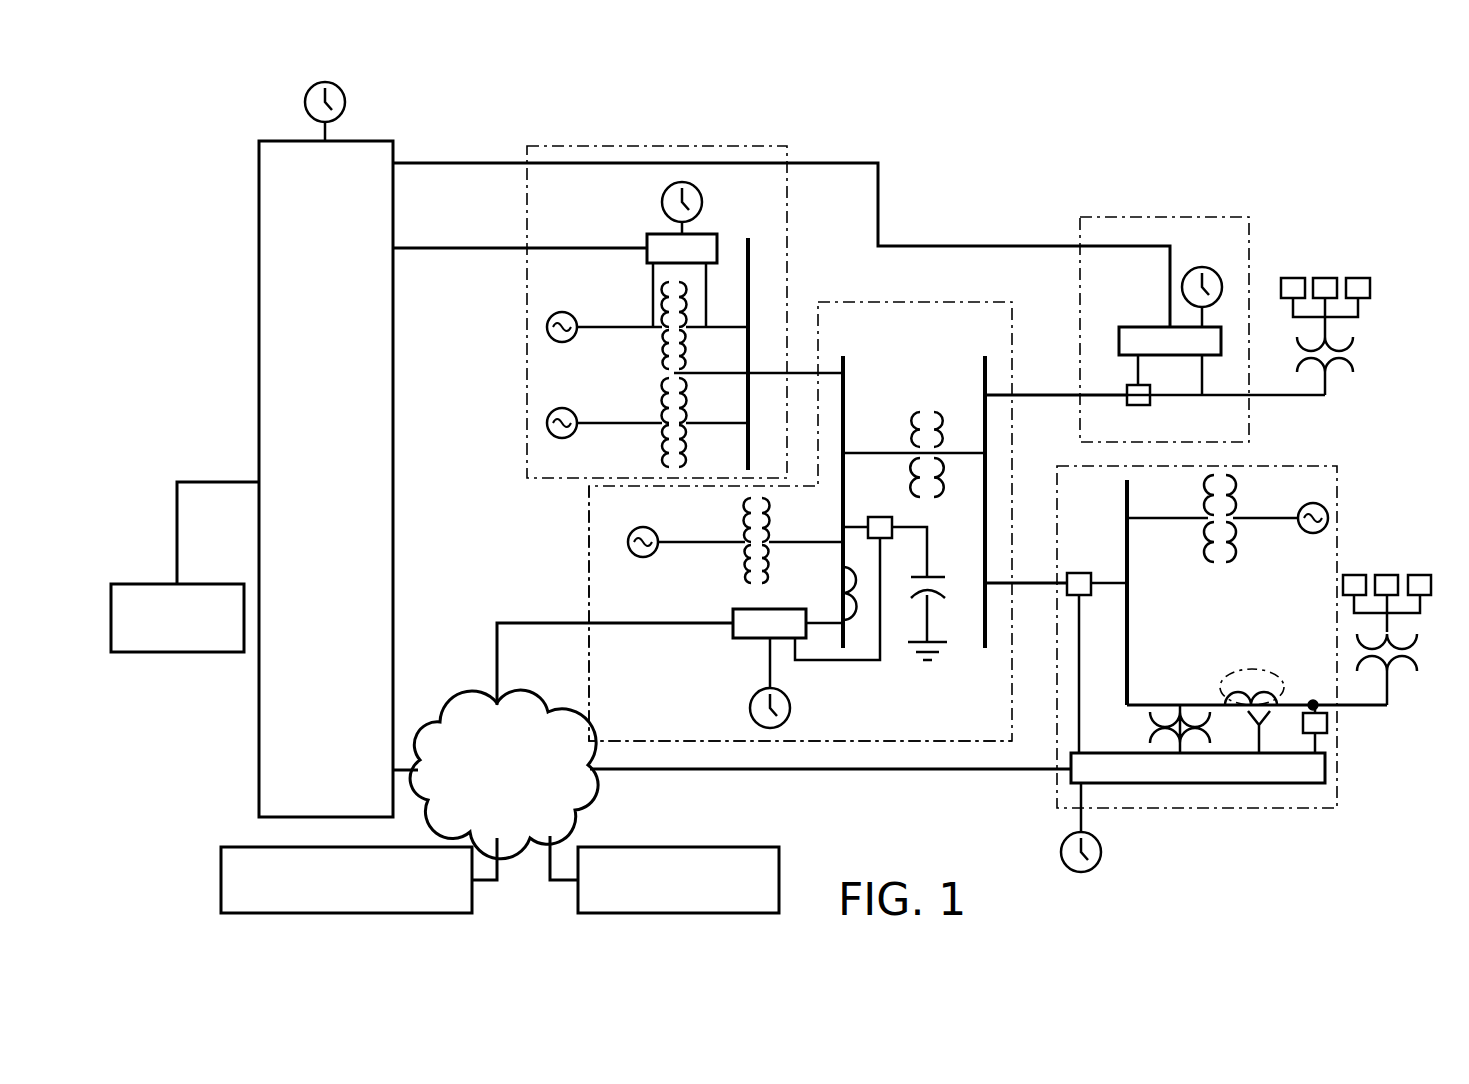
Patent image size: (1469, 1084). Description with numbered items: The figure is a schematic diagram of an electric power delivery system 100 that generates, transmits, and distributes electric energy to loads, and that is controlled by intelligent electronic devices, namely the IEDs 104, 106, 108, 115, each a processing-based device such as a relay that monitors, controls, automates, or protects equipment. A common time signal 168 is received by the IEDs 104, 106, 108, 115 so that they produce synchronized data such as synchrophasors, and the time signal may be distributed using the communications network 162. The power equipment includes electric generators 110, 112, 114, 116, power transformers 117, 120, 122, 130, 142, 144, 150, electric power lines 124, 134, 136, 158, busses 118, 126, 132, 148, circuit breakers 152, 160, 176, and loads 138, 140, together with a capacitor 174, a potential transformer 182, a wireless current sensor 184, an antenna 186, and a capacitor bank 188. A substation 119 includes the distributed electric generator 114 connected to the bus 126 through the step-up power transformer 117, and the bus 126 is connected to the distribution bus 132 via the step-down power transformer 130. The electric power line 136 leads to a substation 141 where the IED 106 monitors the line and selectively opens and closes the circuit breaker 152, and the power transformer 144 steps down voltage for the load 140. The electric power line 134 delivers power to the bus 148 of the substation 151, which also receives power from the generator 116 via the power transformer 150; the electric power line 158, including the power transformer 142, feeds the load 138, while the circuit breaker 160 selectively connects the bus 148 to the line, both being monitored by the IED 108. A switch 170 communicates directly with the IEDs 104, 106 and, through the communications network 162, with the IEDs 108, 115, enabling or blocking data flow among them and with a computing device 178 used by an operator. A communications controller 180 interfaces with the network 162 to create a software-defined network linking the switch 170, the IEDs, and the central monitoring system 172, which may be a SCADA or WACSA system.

The electric power delivery system 100 is at (1328, 135).
The IED 104 is at (652, 234).
The IED 106 is at (1128, 327).
The IED 108 is at (1250, 783).
The electric generator 110 is at (562, 312).
The electric generator 112 is at (562, 408).
The electric generator 114 is at (650, 527).
The IED 115 is at (775, 608).
The electric generator 116 is at (1306, 534).
The power transformer 117 is at (742, 570).
The bus 118 is at (752, 243).
The substation 119 is at (589, 578).
The power transformer 120 is at (660, 360).
The power transformer 122 is at (660, 452).
The electric power line 124 is at (800, 370).
The bus 126 is at (845, 383).
The power transformer 130 is at (924, 412).
The bus 132 is at (983, 630).
The electric power line 134 is at (1024, 586).
The electric power line 136 is at (1105, 397).
The load 138 is at (1387, 574).
The load 140 is at (1360, 278).
The substation 141 is at (1100, 217).
The power transformer 142 is at (1400, 650).
The power transformer 144 is at (1356, 352).
The bus 148 is at (1125, 482).
The power transformer 150 is at (1232, 466).
The substation 151 is at (1315, 808).
The circuit breaker 152 is at (1140, 405).
The electric power line 158 is at (1360, 705).
The circuit breaker 160 is at (1090, 573).
The communications network 162 is at (450, 714).
The common time signal 168 is at (345, 104).
The switch 170 is at (393, 478).
The central monitoring system 172 is at (221, 872).
The capacitor 174 is at (942, 576).
The circuit breaker 176 is at (878, 517).
The computing device 178 is at (176, 654).
The communications controller 180 is at (662, 847).
The potential transformer 182 is at (1152, 727).
The wireless current sensor 184 is at (1248, 670).
The antenna 186 is at (1268, 712).
The capacitor bank 188 is at (1328, 723).